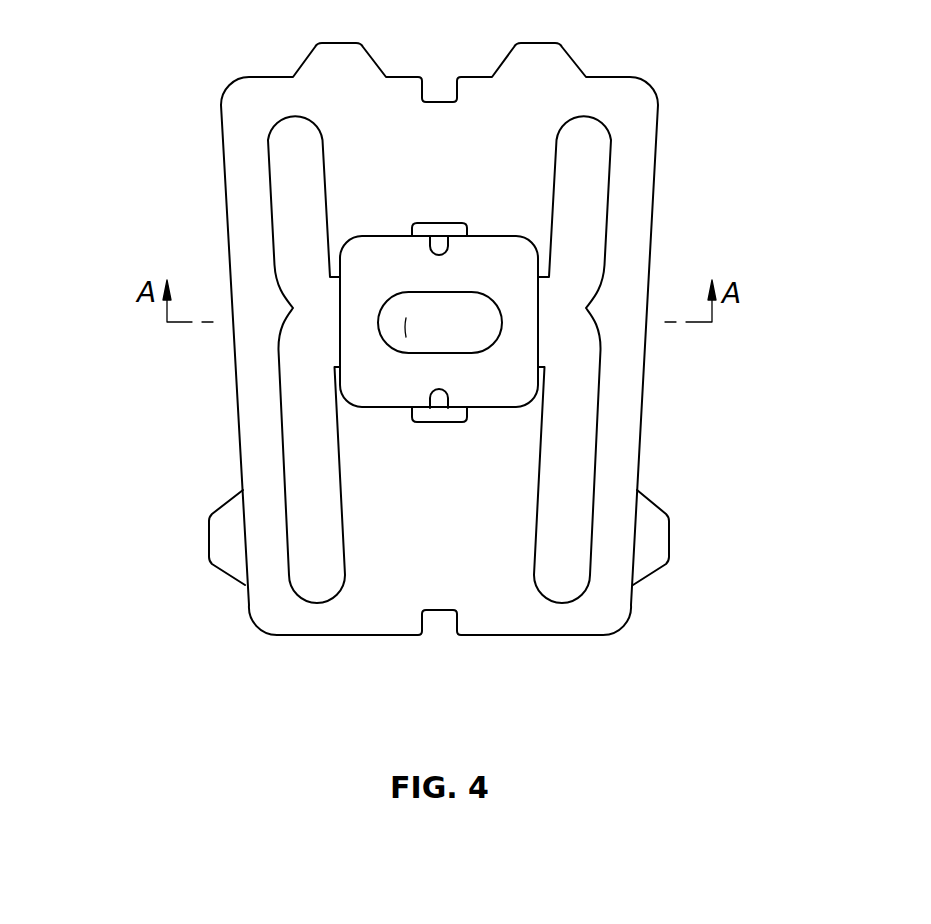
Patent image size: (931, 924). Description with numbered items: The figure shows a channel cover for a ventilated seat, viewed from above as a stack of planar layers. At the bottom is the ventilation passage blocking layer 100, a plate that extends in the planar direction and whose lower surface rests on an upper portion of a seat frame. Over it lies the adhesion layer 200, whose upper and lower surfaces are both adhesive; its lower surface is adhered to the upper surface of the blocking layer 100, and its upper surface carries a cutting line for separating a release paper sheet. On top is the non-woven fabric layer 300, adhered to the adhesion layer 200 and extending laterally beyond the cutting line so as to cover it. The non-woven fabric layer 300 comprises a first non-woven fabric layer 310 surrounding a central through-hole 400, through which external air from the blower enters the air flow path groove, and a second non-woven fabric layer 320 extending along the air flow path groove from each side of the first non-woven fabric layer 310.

The ventilation passage blocking layer 100 is at (660, 535).
The adhesion layer 200 is at (243, 162).
The non-woven fabric layer 300 is at (529, 417).
The first non-woven fabric layer 310 is at (517, 348).
The second non-woven fabric layer 320 is at (588, 182).
The through-hole 400 is at (405, 326).